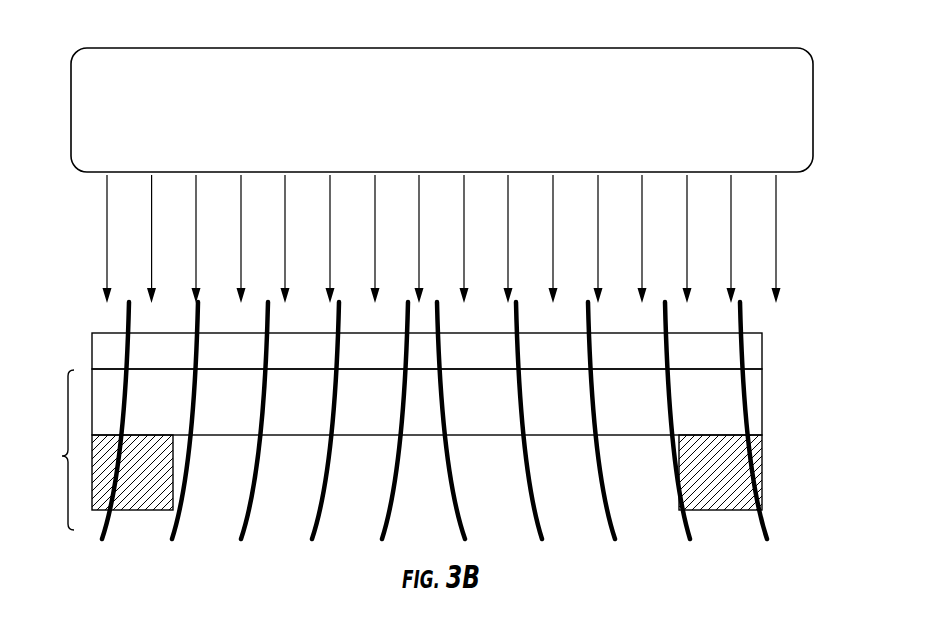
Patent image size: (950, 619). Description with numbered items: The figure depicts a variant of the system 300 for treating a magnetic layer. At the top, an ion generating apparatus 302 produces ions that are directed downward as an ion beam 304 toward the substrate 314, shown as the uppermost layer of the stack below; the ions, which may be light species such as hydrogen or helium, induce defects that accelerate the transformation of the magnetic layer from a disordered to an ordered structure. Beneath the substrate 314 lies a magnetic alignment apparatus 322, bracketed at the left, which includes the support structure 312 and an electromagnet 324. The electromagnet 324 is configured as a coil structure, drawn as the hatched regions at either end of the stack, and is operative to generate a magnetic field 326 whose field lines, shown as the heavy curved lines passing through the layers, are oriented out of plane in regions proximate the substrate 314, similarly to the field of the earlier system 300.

The system 300 is at (66, 260).
The ion generating apparatus 302 is at (815, 73).
The ion beam 304 is at (793, 229).
The magnetic field provider 312 is at (763, 412).
The substrate 314 is at (763, 352).
The magnetic alignment apparatus 322 is at (50, 450).
The electromagnet 324 is at (764, 488).
The magnetic field 326 is at (778, 497).